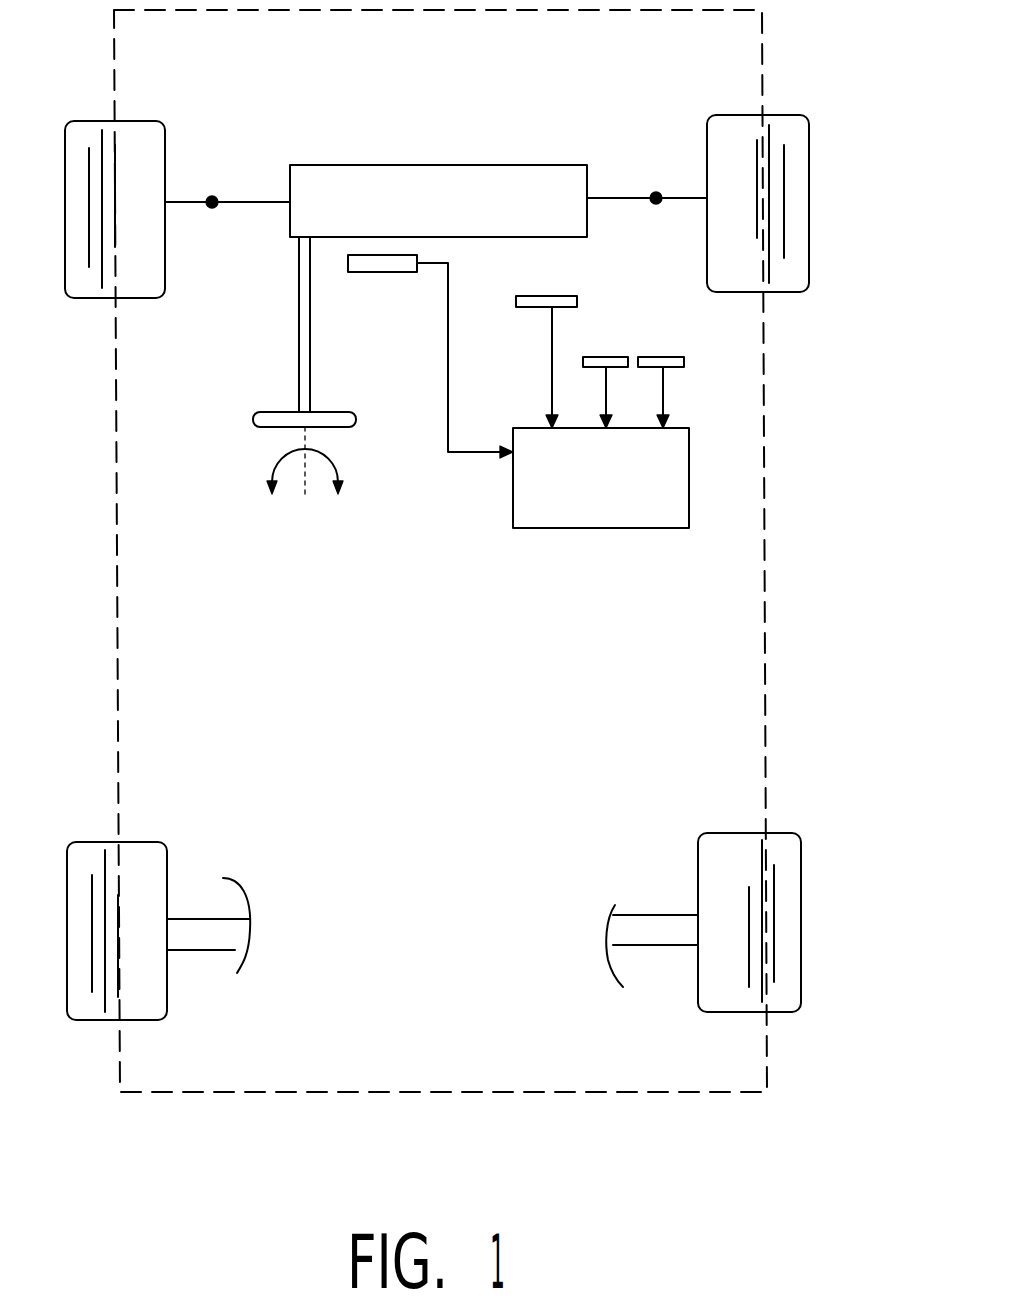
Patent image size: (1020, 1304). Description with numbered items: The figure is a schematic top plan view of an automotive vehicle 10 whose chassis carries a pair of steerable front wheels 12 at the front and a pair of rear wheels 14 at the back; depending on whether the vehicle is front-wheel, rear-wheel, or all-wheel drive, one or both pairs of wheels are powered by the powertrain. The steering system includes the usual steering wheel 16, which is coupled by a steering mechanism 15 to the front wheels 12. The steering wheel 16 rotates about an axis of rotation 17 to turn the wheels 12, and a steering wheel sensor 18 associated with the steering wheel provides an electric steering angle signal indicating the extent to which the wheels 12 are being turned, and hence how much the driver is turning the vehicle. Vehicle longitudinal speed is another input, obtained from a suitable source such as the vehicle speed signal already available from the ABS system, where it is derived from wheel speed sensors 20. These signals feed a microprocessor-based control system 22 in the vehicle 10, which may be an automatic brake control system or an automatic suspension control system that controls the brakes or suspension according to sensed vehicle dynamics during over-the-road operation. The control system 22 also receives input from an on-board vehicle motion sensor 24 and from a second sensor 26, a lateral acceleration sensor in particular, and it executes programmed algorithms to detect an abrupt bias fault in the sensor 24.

The automotive vehicle 10 is at (780, 69).
The steerable front wheels 12 is at (163, 123).
The rear wheels 14 is at (167, 865).
The steering mechanism 15 is at (470, 237).
The steering wheel 16 is at (356, 422).
The axis of rotation 17 is at (300, 441).
The steering wheel sensor 18 is at (405, 272).
The wheel speed sensors 20 is at (546, 296).
The control system 22 is at (603, 528).
The on-board sensor 24 is at (586, 357).
The lateral acceleration sensor 26 is at (641, 357).